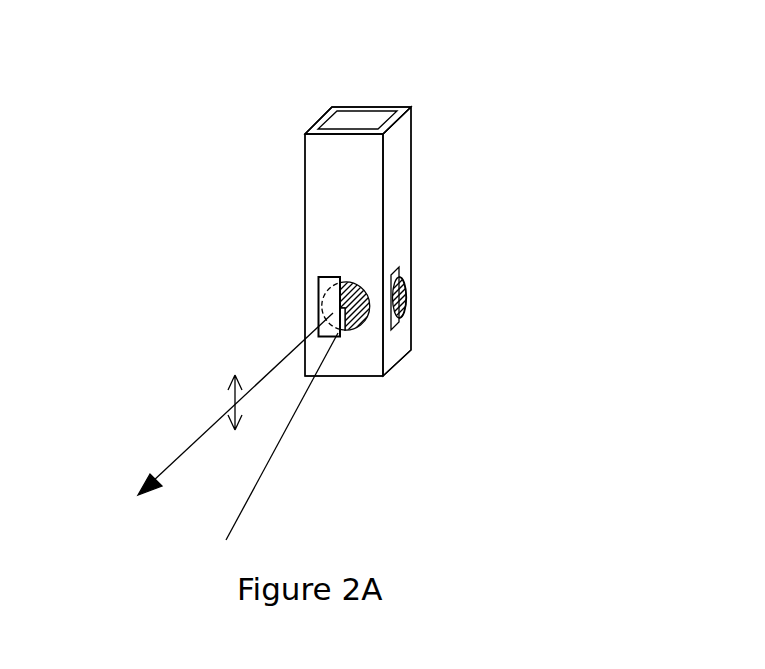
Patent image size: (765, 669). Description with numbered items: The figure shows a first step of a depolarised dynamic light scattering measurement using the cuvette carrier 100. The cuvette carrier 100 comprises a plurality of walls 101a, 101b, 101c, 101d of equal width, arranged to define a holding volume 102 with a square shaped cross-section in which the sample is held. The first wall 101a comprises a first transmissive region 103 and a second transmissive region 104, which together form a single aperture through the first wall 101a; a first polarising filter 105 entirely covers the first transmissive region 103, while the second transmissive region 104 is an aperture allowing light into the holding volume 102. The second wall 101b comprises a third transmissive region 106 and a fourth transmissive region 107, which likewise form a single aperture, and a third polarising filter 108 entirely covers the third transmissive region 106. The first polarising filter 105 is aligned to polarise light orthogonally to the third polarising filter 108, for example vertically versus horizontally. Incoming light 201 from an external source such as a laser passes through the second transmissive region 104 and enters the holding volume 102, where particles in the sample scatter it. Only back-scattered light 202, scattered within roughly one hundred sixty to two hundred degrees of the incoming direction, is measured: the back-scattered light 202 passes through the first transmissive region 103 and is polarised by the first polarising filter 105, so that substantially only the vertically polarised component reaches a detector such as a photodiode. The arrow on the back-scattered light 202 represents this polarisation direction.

The cuvette carrier 100 is at (250, 197).
The first wall 101a is at (320, 247).
The second wall 101b is at (403, 213).
The wall 101c is at (379, 107).
The wall 101d is at (325, 118).
The holding volume 102 is at (410, 108).
The first transmissive region 103 is at (322, 313).
The second transmissive region 104 is at (357, 328).
The first polarising filter 105 is at (318, 293).
The third transmissive region 106 is at (402, 307).
The fourth transmissive region 107 is at (405, 283).
The third polarising filter 108 is at (397, 322).
The incoming light 201 is at (253, 493).
The back-scattered light 202 is at (208, 428).